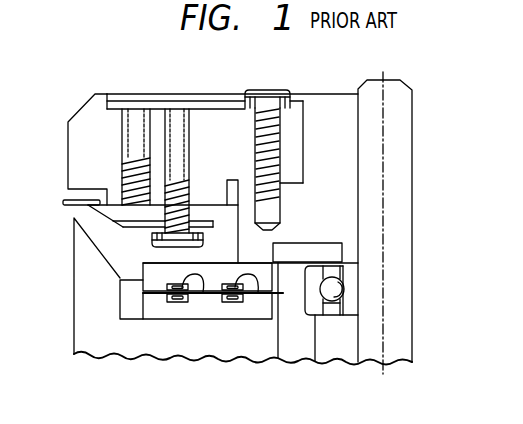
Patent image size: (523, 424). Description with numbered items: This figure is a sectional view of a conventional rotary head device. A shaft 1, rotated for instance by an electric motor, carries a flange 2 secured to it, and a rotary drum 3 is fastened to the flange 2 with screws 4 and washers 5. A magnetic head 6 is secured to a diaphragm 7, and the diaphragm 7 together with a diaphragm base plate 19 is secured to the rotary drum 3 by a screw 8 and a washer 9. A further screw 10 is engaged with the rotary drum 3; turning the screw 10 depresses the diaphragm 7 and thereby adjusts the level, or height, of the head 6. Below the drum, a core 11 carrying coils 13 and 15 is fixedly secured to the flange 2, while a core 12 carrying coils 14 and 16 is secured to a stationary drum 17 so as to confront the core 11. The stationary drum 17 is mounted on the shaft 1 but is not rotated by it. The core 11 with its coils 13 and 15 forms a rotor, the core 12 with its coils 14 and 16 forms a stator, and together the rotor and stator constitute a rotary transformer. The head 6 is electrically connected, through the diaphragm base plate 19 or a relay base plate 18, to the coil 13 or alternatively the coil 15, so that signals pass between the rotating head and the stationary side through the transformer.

The shaft 1 is at (390, 90).
The flange 2 is at (342, 200).
The rotary drum 3 is at (85, 118).
The screws 4 is at (268, 92).
The washers 5 is at (295, 95).
The magnetic head 6 is at (63, 204).
The diaphragm 7 is at (118, 216).
The screw 8 is at (190, 180).
The washer 9 is at (153, 240).
The screw 10 is at (122, 167).
The core 11 is at (137, 292).
The core 12 is at (160, 316).
The coil 13 is at (203, 292).
The coil 14 is at (182, 303).
The coil 15 is at (258, 292).
The coil 16 is at (233, 303).
The stationary drum 17 is at (80, 303).
The relay base plate 18 is at (162, 94).
The diaphragm base plate 19 is at (150, 232).